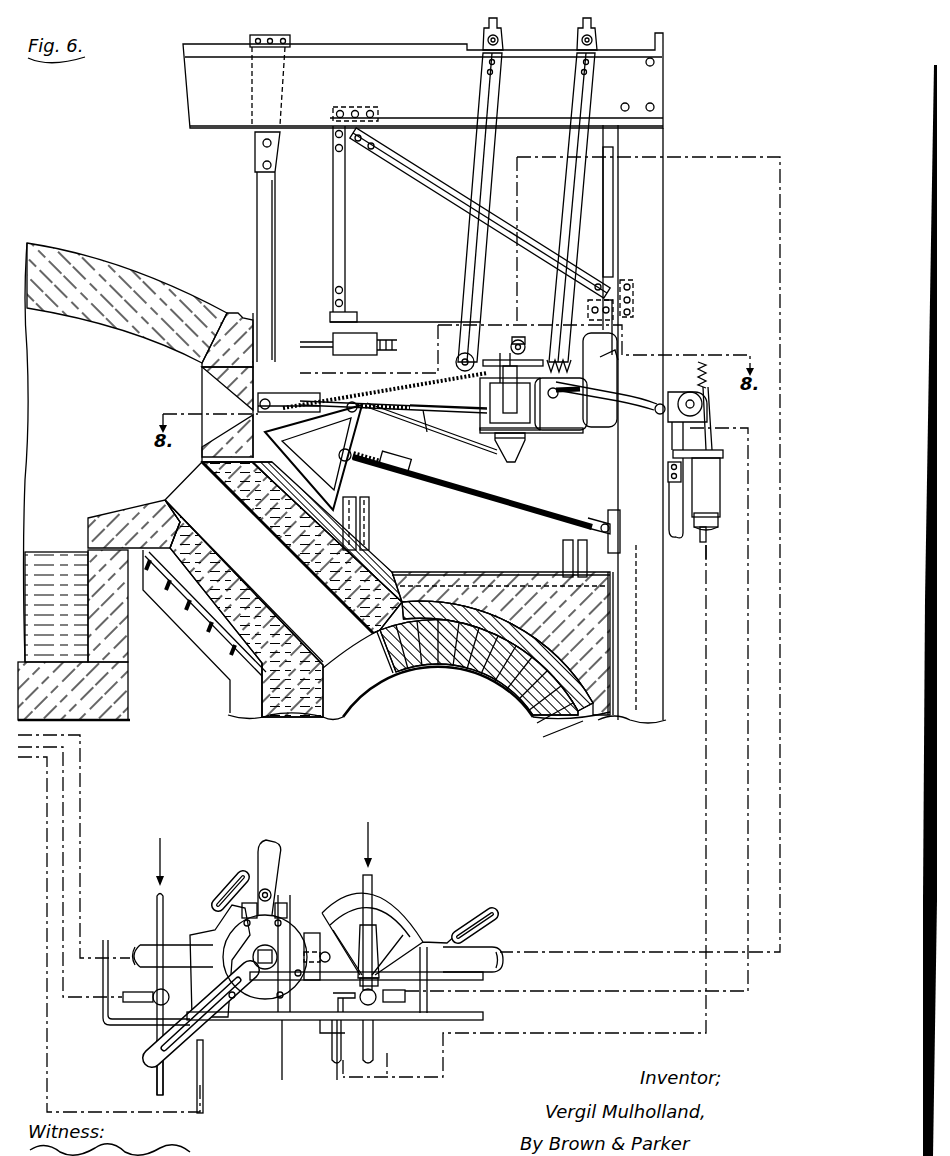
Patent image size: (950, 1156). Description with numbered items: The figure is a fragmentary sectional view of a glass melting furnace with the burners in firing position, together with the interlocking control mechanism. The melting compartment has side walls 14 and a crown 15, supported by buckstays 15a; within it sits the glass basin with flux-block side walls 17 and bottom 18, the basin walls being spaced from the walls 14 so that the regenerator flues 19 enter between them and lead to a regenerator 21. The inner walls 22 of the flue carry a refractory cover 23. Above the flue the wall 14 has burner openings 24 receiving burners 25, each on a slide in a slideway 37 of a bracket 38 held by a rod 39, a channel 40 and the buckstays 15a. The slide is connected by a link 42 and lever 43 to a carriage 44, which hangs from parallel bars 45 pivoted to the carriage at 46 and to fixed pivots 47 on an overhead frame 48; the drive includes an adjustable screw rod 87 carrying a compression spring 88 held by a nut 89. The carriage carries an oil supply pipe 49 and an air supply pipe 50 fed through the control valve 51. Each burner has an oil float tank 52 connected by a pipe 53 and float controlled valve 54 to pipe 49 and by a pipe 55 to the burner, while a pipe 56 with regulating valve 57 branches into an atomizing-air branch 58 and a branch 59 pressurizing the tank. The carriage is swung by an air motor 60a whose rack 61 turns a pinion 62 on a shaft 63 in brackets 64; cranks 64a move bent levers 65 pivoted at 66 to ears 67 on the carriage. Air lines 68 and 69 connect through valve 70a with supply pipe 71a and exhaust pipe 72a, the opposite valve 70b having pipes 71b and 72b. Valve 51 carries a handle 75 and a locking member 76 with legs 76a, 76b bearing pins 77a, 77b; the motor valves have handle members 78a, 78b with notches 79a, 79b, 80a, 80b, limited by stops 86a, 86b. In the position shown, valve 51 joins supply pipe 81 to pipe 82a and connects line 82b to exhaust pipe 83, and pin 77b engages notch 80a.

The side walls 14 is at (232, 312).
The crown 15 is at (72, 263).
The buckstays 15a is at (645, 208).
The side walls of basin 17 is at (128, 648).
The bottom of basin 18 is at (90, 722).
The regenerator flues 19 is at (283, 562).
The regenerator 21 is at (433, 668).
The inner walls of flue 22 is at (254, 606).
The refractory cover 23 is at (115, 520).
The burner openings 24 is at (222, 403).
The burners 25 is at (272, 400).
The slideway 37 is at (298, 420).
The bracket 38 is at (362, 440).
The rod 39 is at (446, 490).
The channel 40 is at (603, 520).
The link 42 is at (425, 416).
The lever 43 is at (473, 399).
The carriage 44 is at (536, 433).
The parallel bars 45 is at (567, 148).
The pivot on carriage 46 is at (410, 320).
The fixed pivots 47 is at (580, 38).
The overhead frame 48 is at (205, 101).
The oil supply pipe 49 is at (503, 357).
The air supply pipe 50 is at (512, 336).
The control valve 51 is at (304, 1028).
The oil float tank 52 is at (500, 450).
The pipe 53 is at (585, 420).
The float controlled valve 54 is at (580, 394).
The pipe 55 is at (453, 436).
The pipe 56 is at (528, 352).
The regulating valve 57 is at (524, 335).
The branch 58 is at (397, 390).
The branch 59 is at (522, 458).
The air motor 60a is at (712, 486).
The rack 61 is at (708, 372).
The pinion 62 is at (685, 392).
The shaft 63 is at (702, 405).
The brackets 64 is at (683, 533).
The cranks 64a is at (668, 466).
The bent levers 65 is at (646, 390).
The pivot 66 is at (550, 374).
The ears 67 is at (554, 398).
The air line 68 is at (748, 562).
The air line 69 is at (706, 617).
The valve 70a is at (376, 1003).
The valve 70b is at (158, 1006).
The pipe 71a is at (372, 878).
The pipe 71b is at (145, 890).
The exhaust pipe 72a is at (373, 1064).
The exhaust pipe 72b is at (158, 1089).
The handle 75 is at (198, 1113).
The locking member 76 is at (280, 915).
The leg 76a is at (252, 860).
The leg 76b is at (322, 1036).
The locking pin 77a is at (268, 893).
The locking pin 77b is at (330, 952).
The combined handle and locking member 78a is at (415, 912).
The combined handle and locking member 78b is at (200, 953).
The locking notch 79a is at (466, 915).
The locking notch 79b is at (215, 893).
The locking notch 80a is at (364, 928).
The locking notch 80b is at (200, 1047).
The air supply pipe 81 is at (276, 846).
The pipe 82a is at (503, 947).
The line 82b is at (150, 951).
The exhaust pipe 83 is at (262, 1104).
The stop 86a is at (428, 1008).
The stop 86b is at (106, 1020).
The adjustable screw rod 87 is at (500, 368).
The compression spring 88 is at (625, 345).
The nut 89 is at (610, 362).